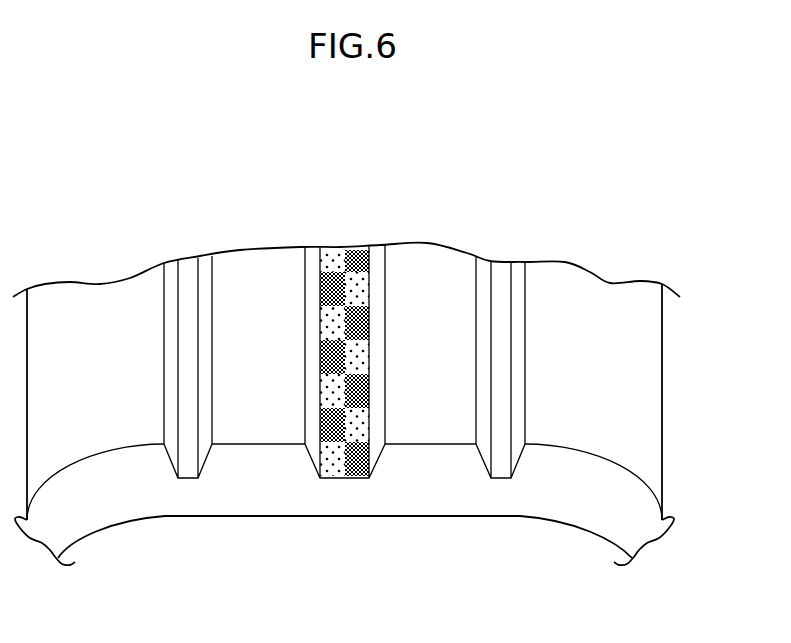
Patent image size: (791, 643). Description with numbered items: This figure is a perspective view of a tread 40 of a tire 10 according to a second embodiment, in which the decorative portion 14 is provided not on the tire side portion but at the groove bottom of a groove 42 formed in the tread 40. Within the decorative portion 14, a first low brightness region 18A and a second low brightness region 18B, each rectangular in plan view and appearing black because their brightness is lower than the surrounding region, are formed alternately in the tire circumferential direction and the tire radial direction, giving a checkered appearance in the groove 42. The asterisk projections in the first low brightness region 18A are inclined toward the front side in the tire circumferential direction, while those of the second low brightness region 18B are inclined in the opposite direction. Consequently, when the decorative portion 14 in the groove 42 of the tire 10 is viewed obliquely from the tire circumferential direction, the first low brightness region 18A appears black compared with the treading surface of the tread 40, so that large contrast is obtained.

The tire 10 is at (145, 189).
The decorative portion 14 is at (345, 250).
The first low brightness region 18A is at (357, 322).
The second low brightness region 18B is at (357, 357).
The tread 40 is at (260, 268).
The groove 42 is at (190, 270).